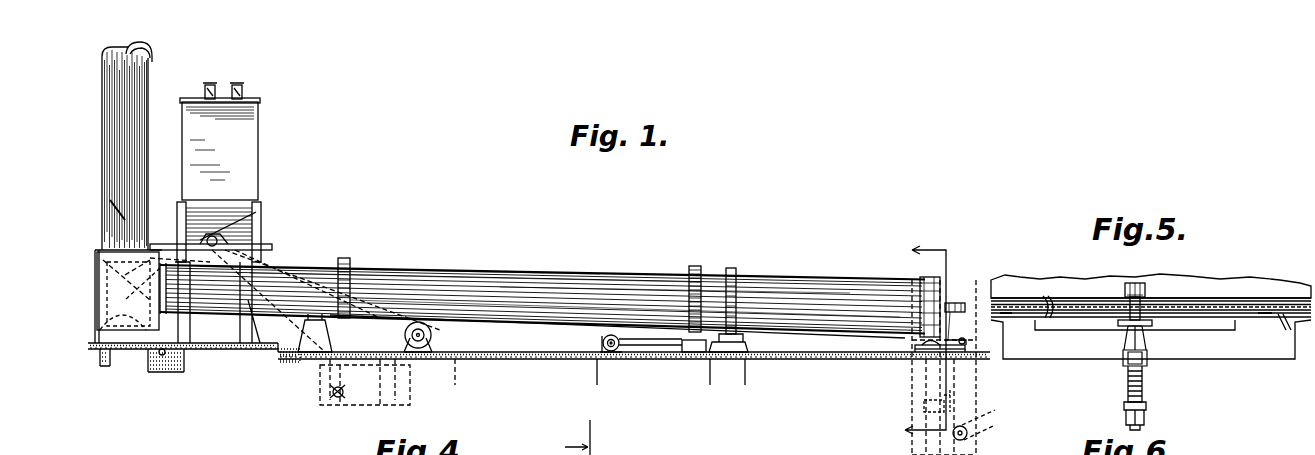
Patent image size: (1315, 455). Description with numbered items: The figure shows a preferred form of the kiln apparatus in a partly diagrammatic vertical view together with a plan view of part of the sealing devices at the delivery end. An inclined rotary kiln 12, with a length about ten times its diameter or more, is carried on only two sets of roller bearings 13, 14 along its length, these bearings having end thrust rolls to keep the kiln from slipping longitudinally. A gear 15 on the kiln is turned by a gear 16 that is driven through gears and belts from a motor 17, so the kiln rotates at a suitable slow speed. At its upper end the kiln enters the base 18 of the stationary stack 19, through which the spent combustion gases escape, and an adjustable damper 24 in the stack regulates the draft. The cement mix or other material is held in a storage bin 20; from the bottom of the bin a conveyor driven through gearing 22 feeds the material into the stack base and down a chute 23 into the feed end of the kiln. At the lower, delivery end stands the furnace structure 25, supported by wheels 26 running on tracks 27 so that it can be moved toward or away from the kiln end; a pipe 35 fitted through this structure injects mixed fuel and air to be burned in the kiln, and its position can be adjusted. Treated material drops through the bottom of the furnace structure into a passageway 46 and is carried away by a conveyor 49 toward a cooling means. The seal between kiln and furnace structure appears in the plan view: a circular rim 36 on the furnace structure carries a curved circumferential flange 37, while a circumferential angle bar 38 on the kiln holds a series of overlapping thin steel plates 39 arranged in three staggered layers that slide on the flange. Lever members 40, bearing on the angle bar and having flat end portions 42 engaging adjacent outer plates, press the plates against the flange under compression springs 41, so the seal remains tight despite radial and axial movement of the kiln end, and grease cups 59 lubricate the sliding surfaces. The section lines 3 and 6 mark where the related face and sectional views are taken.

In FIG. 1, the section line 3— 3 is at (917, 342).
In FIG. 1, the section line 6— 6 is at (585, 437).
In FIG. 1, the inclined rotary kiln 12 is at (575, 268).
In FIG. 1, the roller bearings 13 is at (742, 335).
In FIG. 1, the roller bearings 14 is at (340, 320).
In FIG. 1, the gear 15 is at (698, 270).
In FIG. 1, the gear 16 is at (692, 356).
In FIG. 1, the motor 17 is at (410, 325).
In FIG. 1, the base of the stack 18 is at (128, 296).
In FIG. 1, the stationary stack 19 is at (104, 160).
In FIG. 1, the storage bin 20 is at (220, 141).
In FIG. 1, the gearing 22 is at (216, 238).
In FIG. 1, the chute 23 is at (146, 262).
In FIG. 1, the adjustable damper 24 is at (112, 208).
In FIG. 1, the furnace structure 25 is at (934, 277).
In FIG. 1, the wheels 26 is at (914, 345).
In FIG. 1, the tracks 27 is at (920, 360).
In FIG. 1, the pipe 35 is at (955, 302).
In FIG. 5, the circular rim 36 is at (1227, 275).
In FIG. 5, the curved circumferential flange 37 is at (1280, 300).
In FIG. 5, the circumferential angle bar 38 is at (1212, 353).
In FIG. 5, the thin steel plates 39 is at (1156, 312).
In FIG. 5, the lever members 40 is at (1122, 348).
In FIG. 5, the compression springs 41 is at (1142, 384).
In FIG. 5, the flat end portions 42 is at (1142, 322).
In FIG. 1, the passageway 46 is at (924, 392).
In FIG. 1, the conveyor 49 is at (982, 410).
In FIG. 5, the grease cups 59 is at (1135, 282).